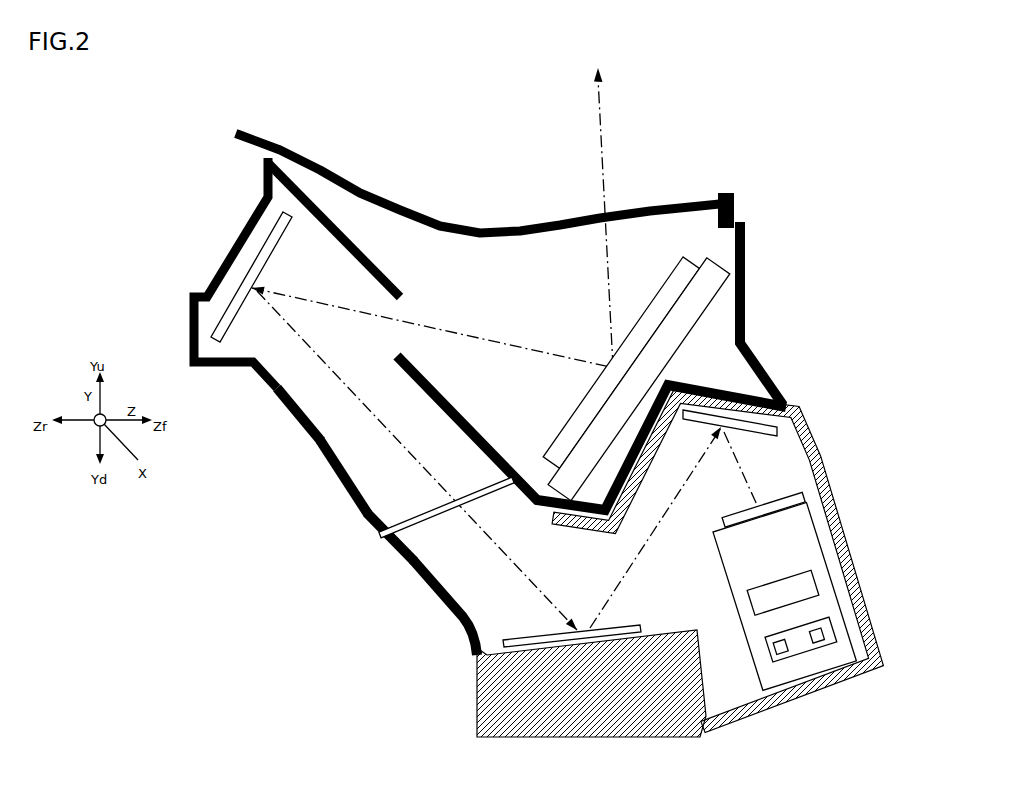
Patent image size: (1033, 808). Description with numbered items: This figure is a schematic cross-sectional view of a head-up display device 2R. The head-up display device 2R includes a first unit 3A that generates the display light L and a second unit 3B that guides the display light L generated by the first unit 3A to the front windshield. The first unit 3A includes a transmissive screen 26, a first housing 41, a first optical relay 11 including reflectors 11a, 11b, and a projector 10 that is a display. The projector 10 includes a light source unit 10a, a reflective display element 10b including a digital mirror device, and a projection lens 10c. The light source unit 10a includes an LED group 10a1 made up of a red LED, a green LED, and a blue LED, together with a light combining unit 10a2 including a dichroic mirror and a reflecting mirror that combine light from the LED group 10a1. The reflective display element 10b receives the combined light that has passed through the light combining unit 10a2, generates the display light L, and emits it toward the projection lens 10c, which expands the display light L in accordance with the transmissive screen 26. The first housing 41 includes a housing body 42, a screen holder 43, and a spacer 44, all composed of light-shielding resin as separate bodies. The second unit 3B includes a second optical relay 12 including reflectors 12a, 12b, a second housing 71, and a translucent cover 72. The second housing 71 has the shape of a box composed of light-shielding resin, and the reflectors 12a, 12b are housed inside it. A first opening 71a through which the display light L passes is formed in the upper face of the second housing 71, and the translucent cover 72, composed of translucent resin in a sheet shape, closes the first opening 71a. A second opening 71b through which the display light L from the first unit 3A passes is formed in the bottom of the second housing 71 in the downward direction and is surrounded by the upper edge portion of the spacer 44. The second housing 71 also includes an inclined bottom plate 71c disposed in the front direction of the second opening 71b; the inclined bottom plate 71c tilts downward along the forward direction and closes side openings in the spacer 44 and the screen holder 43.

The head-up display device 2R is at (696, 532).
The first unit 3A is at (824, 430).
The second unit 3B is at (810, 330).
The projector 10 is at (843, 626).
The light source unit 10a is at (855, 690).
The LED group 10a1 is at (781, 657).
The light combining unit 10a2 is at (817, 643).
The reflective display element 10b is at (818, 583).
The projection lens 10c is at (795, 503).
The first optical relay 11 is at (640, 528).
The reflector 11a is at (718, 433).
The reflector 11b is at (601, 632).
The second optical relay 12 is at (470, 356).
The reflector 12a is at (258, 264).
The reflector 12b is at (660, 291).
The transmissive screen 26 is at (410, 517).
The first housing 41 is at (355, 547).
The housing body 42 is at (420, 588).
The screen holder 43 is at (370, 521).
The spacer 44 is at (317, 445).
The second housing 71 is at (745, 250).
The first opening 71a is at (308, 177).
The second opening 71b is at (276, 393).
The inclined bottom plate 71c is at (463, 430).
The translucent cover 72 is at (470, 228).
The display light L is at (504, 349).